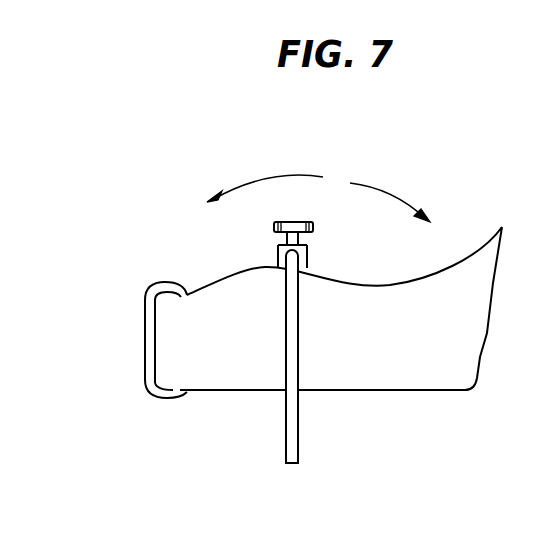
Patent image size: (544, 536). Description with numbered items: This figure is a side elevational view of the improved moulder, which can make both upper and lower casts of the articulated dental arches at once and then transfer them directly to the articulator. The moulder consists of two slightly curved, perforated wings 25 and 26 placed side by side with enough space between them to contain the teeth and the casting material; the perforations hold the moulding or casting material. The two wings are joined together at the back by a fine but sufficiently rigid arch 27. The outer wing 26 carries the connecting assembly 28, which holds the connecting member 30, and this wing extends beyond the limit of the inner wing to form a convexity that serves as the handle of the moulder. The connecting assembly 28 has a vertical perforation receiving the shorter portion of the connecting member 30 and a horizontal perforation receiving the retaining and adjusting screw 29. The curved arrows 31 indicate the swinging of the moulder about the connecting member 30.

The wing 25 is at (345, 392).
The outer wing 26 is at (235, 279).
The arch 27 is at (147, 337).
The connecting assembly 28 is at (308, 251).
The retaining and adjusting screw 29 is at (303, 222).
The connecting member 30 is at (300, 336).
The rotation direction arrows 31 is at (277, 176).